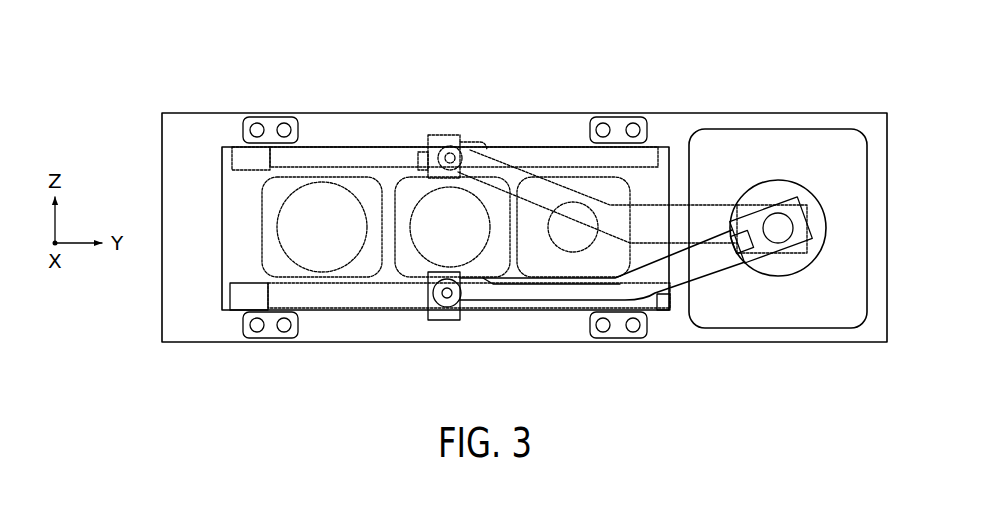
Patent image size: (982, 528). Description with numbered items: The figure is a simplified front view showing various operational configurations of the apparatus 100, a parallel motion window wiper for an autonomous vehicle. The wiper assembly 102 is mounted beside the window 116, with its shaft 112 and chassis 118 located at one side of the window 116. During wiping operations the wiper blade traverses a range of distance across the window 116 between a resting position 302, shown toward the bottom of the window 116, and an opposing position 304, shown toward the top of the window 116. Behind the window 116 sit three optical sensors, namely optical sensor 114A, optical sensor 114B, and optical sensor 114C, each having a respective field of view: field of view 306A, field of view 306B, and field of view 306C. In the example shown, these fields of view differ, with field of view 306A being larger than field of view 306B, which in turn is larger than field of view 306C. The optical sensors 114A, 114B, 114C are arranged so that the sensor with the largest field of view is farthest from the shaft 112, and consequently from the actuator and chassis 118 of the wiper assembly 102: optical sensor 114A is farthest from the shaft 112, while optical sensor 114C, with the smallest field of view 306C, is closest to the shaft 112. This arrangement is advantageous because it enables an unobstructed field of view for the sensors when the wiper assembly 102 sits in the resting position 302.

The apparatus 100 is at (78, 125).
The wiper assembly 102 is at (706, 278).
The shaft 112 is at (778, 213).
The optical sensor 114A is at (340, 180).
The optical sensor 114B is at (470, 175).
The optical sensor 114C is at (593, 173).
The window 116 is at (222, 275).
The chassis 118 is at (815, 140).
The resting position 302 is at (231, 312).
The opposing position 304 is at (231, 156).
The field of view 306A is at (362, 255).
The field of view 306B is at (478, 255).
The field of view 306C is at (583, 240).